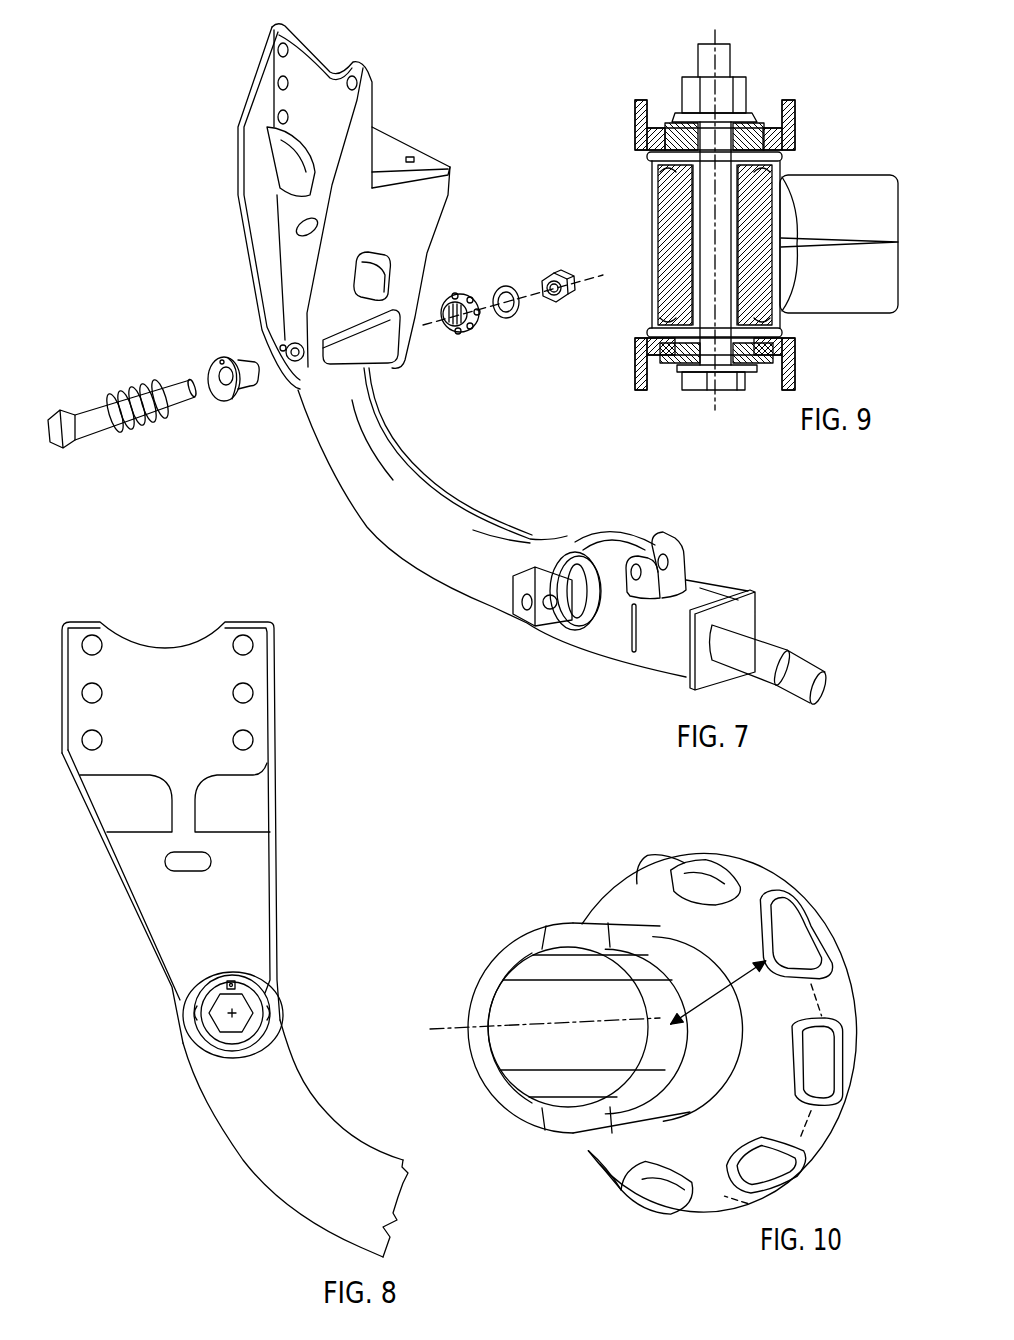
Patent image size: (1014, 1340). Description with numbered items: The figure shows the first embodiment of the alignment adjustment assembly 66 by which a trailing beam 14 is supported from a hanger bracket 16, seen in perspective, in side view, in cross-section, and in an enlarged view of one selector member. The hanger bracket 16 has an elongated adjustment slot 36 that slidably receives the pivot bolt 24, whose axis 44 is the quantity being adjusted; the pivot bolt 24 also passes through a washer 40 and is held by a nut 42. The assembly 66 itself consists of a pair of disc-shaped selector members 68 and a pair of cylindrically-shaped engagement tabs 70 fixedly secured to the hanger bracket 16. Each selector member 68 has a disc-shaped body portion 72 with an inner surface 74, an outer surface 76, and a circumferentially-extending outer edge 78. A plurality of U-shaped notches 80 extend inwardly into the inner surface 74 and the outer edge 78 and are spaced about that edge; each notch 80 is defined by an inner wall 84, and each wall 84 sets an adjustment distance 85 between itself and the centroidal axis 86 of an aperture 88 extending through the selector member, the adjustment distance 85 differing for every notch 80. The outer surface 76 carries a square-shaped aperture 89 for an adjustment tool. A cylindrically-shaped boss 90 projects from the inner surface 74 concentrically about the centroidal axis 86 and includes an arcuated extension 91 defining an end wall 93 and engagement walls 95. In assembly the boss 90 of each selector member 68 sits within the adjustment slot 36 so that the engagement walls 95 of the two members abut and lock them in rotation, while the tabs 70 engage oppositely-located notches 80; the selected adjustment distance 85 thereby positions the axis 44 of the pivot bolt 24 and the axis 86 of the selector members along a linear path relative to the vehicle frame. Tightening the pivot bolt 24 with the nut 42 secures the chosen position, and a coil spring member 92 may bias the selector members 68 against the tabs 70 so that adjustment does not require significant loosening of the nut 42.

In FIG. 7, the trailing beam 14 is at (342, 490).
In FIG. 9, the trailing beam 14 is at (843, 175).
In FIG. 8, the trailing beam 14 is at (224, 1132).
In FIG. 7, the hanger bracket 16 is at (240, 247).
In FIG. 9, the hanger bracket 16 is at (793, 120).
In FIG. 8, the hanger bracket 16 is at (121, 882).
In FIG. 7, the pivot bolt 24 is at (96, 426).
In FIG. 9, the pivot bolt 24 is at (730, 270).
In FIG. 8, the pivot bolt 24 is at (213, 1001).
In FIG. 7, the adjustment slot 36 is at (293, 381).
In FIG. 7, the washer 40 is at (522, 313).
In FIG. 7, the nut 42 is at (570, 296).
In FIG. 7, the axis of the pivot bolt 44 is at (585, 277).
In FIG. 9, the axis of the pivot bolt 44 is at (717, 396).
In FIG. 8, the axis of the pivot bolt 44 is at (229, 1016).
In FIG. 7, the alignment adjustment assembly 66 is at (456, 260).
In FIG. 9, the alignment adjustment assembly 66 is at (645, 91).
In FIG. 8, the alignment adjustment assembly 66 is at (246, 974).
In FIG. 7, the selector member 68 is at (479, 328).
In FIG. 9, the selector member 68 is at (683, 375).
In FIG. 8, the selector member 68 is at (262, 991).
In FIG. 10, the selector member 68 is at (770, 851).
In FIG. 7, the engagement tab 70 is at (281, 348).
In FIG. 9, the engagement tab 70 is at (663, 378).
In FIG. 8, the engagement tab 70 is at (273, 1012).
In FIG. 10, the disc-shaped body portion 72 is at (783, 873).
In FIG. 10, the inner surface 74 is at (650, 865).
In FIG. 7, the outer surface 76 is at (208, 364).
In FIG. 10, the outer edge 78 is at (830, 977).
In FIG. 10, the notch 80 is at (792, 928).
In FIG. 10, the inner wall 84 is at (698, 866).
In FIG. 10, the adjustment distance 85 is at (697, 983).
In FIG. 10, the centroidal axis 86 is at (447, 1027).
In FIG. 10, the aperture 88 is at (505, 950).
In FIG. 7, the square-shaped aperture 89 is at (219, 358).
In FIG. 8, the square-shaped aperture 89 is at (226, 978).
In FIG. 10, the boss 90 is at (487, 957).
In FIG. 10, the arcuated extension 91 is at (560, 1135).
In FIG. 7, the spring member 92 is at (134, 398).
In FIG. 10, the end wall 93 is at (478, 1000).
In FIG. 10, the engagement wall 95 is at (576, 930).